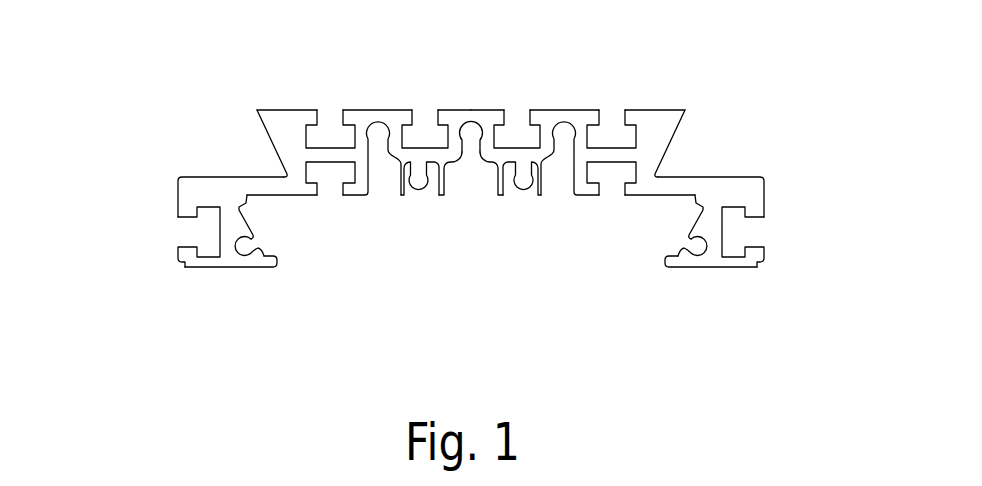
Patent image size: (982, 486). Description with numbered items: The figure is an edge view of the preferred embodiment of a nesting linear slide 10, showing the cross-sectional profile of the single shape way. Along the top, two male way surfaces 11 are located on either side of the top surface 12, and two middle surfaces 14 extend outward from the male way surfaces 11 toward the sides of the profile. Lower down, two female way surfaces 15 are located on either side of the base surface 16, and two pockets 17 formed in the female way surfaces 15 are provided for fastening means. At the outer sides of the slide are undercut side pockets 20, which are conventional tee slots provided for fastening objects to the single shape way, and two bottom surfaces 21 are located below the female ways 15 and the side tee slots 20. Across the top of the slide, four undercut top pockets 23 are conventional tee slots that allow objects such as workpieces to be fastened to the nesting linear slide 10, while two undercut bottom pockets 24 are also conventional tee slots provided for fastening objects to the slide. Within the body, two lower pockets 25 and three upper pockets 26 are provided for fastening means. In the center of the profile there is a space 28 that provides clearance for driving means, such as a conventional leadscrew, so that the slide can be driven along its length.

The nesting linear slide 10 is at (276, 66).
The male way surfaces 11 is at (258, 123).
The top surface 12 is at (657, 110).
The middle surfaces 14 is at (220, 175).
The female way surfaces 15 is at (257, 235).
The base surface 16 is at (277, 196).
The pockets 17 is at (240, 255).
The undercut side pockets 20 is at (220, 233).
The bottom surfaces 21 is at (252, 270).
The undercut top pockets 23 is at (328, 147).
The undercut bottom pockets 24 is at (327, 170).
The lower pockets 25 is at (418, 183).
The upper pockets 26 is at (377, 137).
The space 28 is at (472, 198).